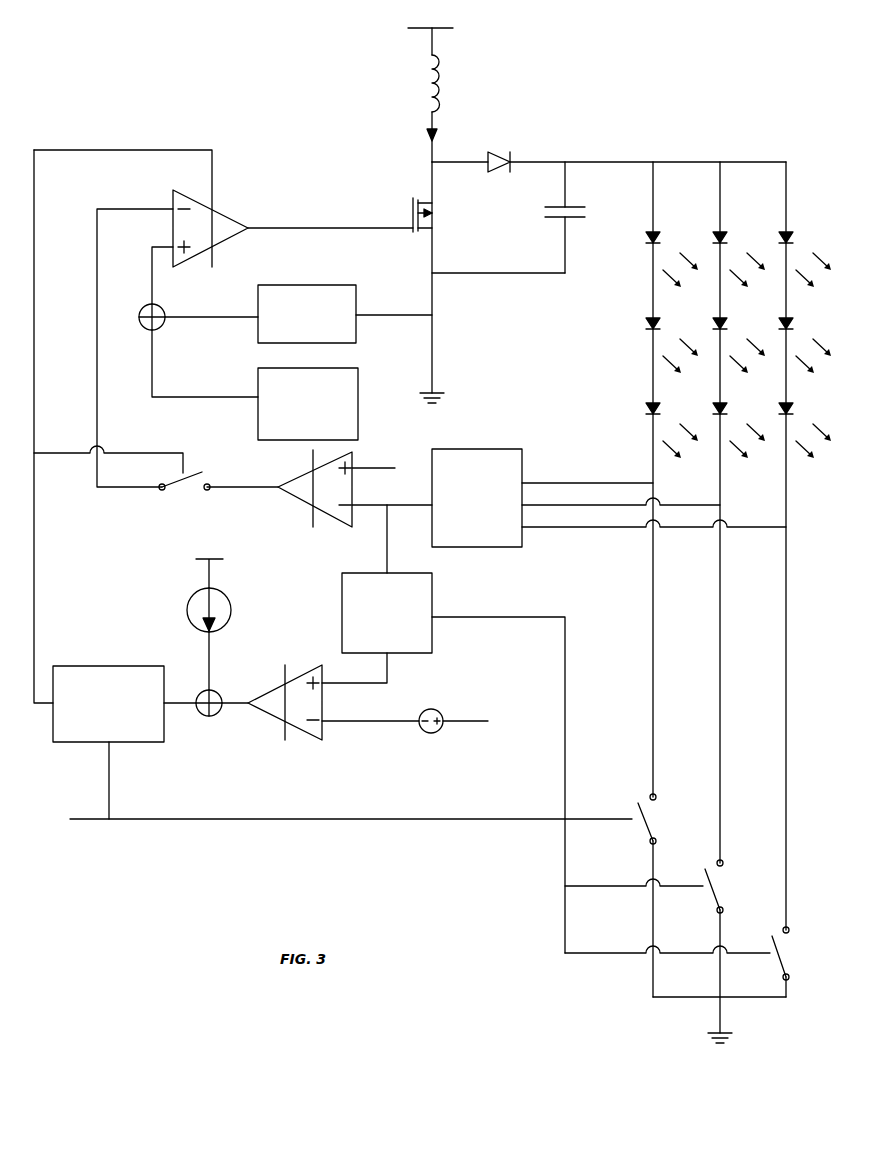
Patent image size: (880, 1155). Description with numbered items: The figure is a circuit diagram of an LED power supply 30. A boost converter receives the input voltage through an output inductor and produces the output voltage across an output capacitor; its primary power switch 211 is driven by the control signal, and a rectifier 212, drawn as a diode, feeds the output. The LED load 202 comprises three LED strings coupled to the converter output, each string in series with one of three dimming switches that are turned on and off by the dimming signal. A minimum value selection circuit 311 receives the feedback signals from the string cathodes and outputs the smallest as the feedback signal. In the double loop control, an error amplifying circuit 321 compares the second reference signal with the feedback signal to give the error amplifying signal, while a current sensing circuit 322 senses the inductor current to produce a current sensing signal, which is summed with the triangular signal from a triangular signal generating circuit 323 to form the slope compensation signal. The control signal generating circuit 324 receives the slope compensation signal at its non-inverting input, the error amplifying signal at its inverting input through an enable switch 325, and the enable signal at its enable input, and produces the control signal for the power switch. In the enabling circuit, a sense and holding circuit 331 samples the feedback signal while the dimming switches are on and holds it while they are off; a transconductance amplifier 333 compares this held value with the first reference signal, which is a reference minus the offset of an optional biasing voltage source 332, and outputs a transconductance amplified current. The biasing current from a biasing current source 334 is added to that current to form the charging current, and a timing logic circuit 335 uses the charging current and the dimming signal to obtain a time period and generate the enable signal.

The LED power supply 30 is at (338, 106).
The rectifier 212 is at (498, 151).
The primary power switch 211 is at (356, 215).
The control signal generating circuit 324 is at (231, 214).
The current sensing circuit 322 is at (307, 314).
The triangular signal generating circuit 323 is at (308, 404).
The enable switch 325 is at (177, 490).
The error amplifying circuit 321 is at (311, 489).
The minimum value selection circuit 311 is at (477, 498).
The sense and holding circuit 331 is at (387, 613).
The biasing current source 334 is at (223, 600).
The timing logic circuit 335 is at (108, 704).
The transconductance amplifier 333 is at (278, 720).
The biasing voltage source 332 is at (430, 733).
The LED load 202 is at (641, 337).